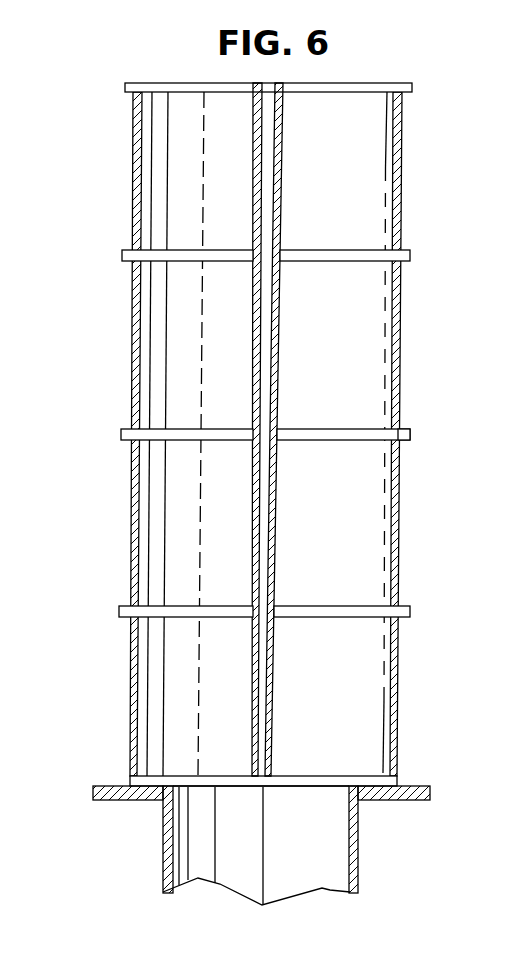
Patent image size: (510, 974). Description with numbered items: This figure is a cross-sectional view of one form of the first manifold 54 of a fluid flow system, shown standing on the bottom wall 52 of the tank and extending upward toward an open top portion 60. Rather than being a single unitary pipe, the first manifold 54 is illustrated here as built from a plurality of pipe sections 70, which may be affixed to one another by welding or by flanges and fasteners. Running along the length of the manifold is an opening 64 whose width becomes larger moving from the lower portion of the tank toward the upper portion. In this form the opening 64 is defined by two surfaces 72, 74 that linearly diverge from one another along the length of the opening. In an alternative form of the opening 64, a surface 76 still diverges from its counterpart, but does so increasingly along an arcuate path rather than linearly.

The first manifold 54 is at (83, 387).
The open top portion 60 is at (362, 88).
The opening 64 is at (257, 429).
The surface 72 is at (255, 148).
The surface 74 is at (280, 140).
The pipe sections 70 is at (133, 322).
The bottom wall 52 is at (103, 787).
The surface 76 is at (509, 443).